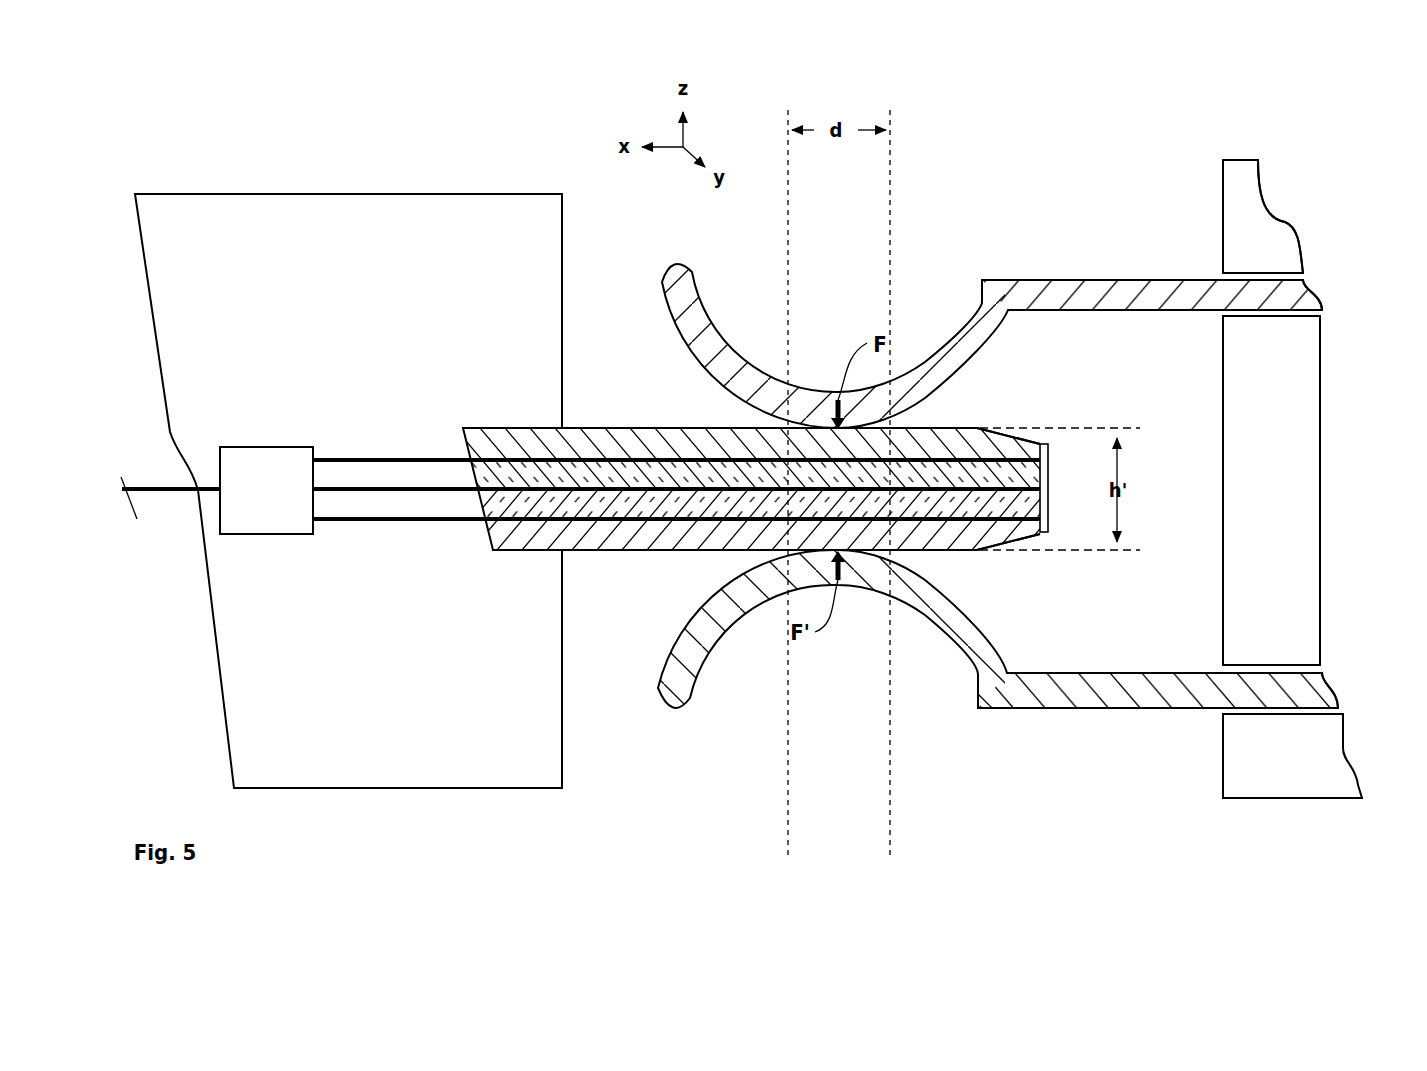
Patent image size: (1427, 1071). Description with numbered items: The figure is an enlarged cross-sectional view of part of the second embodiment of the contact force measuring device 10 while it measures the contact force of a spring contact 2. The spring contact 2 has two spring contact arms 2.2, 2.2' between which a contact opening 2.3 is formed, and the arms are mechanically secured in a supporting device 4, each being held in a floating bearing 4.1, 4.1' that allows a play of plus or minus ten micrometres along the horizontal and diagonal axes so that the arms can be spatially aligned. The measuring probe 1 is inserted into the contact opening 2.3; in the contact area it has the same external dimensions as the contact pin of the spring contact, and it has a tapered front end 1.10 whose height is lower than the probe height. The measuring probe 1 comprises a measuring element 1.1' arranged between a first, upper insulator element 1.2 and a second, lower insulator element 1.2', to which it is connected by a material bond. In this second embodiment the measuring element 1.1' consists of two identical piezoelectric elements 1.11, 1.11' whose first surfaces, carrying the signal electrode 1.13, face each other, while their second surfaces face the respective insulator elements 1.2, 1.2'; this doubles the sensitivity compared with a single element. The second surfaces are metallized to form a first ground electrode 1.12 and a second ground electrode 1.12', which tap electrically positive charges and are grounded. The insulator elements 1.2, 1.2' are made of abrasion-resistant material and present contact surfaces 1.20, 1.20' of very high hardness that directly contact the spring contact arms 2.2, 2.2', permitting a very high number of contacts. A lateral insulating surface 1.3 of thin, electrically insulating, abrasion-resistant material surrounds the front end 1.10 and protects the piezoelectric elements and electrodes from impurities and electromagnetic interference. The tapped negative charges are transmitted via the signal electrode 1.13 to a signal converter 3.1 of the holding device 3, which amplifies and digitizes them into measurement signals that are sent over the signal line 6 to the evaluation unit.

The measuring probe 1 is at (1090, 408).
The measuring element 1.1' is at (657, 595).
The first piezoelectric element 1.11 is at (751, 549).
The second piezoelectric element 1.11' is at (759, 579).
The first ground electrode 1.12 is at (676, 565).
The second ground electrode 1.12' is at (676, 594).
The signal electrode 1.13 is at (340, 492).
The first insulator element 1.2 is at (720, 388).
The second insulator element 1.2' is at (735, 594).
The contact surface 1.20 is at (925, 406).
The contact surface 1.20' is at (926, 575).
The tapered front end 1.10 is at (1015, 540).
The lateral insulating surface 1.3 is at (1048, 468).
The spring contact 2 is at (990, 191).
The spring contact arm 2.2 is at (1152, 251).
The spring contact arm 2.2' is at (1158, 450).
The contact opening 2.3 is at (1043, 357).
The holding device 3 is at (357, 770).
The signal converter 3.1 is at (251, 505).
The supporting device 4 is at (1281, 778).
The floating bearing 4.1 is at (1313, 216).
The floating bearing 4.1' is at (1322, 490).
The signal line 6 is at (165, 497).
The contact force measuring device 10 is at (1318, 150).